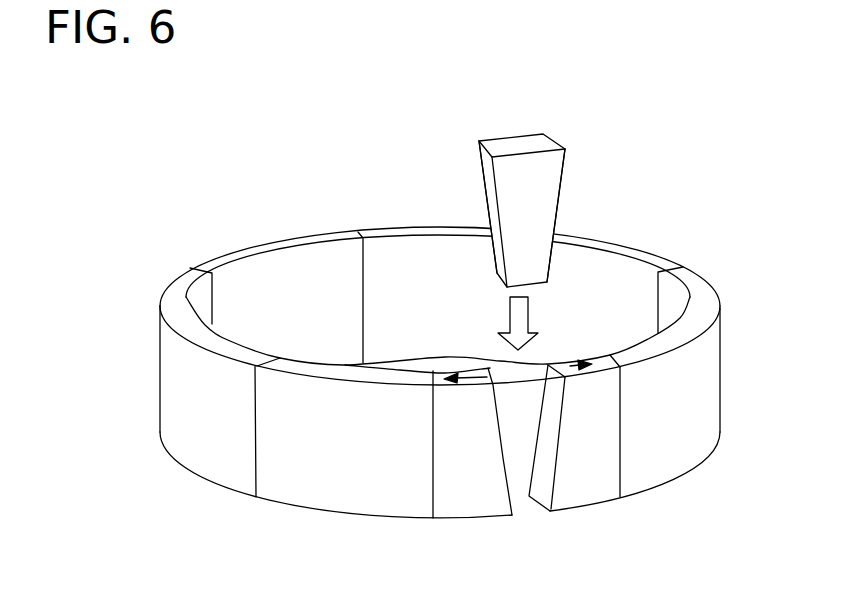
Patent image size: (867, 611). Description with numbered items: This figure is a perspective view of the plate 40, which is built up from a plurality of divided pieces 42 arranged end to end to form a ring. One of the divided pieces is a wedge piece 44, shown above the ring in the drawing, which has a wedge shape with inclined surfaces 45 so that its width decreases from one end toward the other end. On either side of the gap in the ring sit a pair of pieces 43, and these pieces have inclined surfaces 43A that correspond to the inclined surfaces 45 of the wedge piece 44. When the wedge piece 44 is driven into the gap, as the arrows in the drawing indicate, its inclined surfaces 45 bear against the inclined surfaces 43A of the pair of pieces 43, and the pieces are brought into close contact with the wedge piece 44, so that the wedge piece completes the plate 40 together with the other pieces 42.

The plate 40 is at (312, 199).
The pieces 42 is at (338, 497).
The pair of pieces 43 is at (475, 522).
The inclined surfaces 43A is at (496, 403).
The wedge piece 44 is at (513, 147).
The inclined surfaces 45 is at (490, 180).